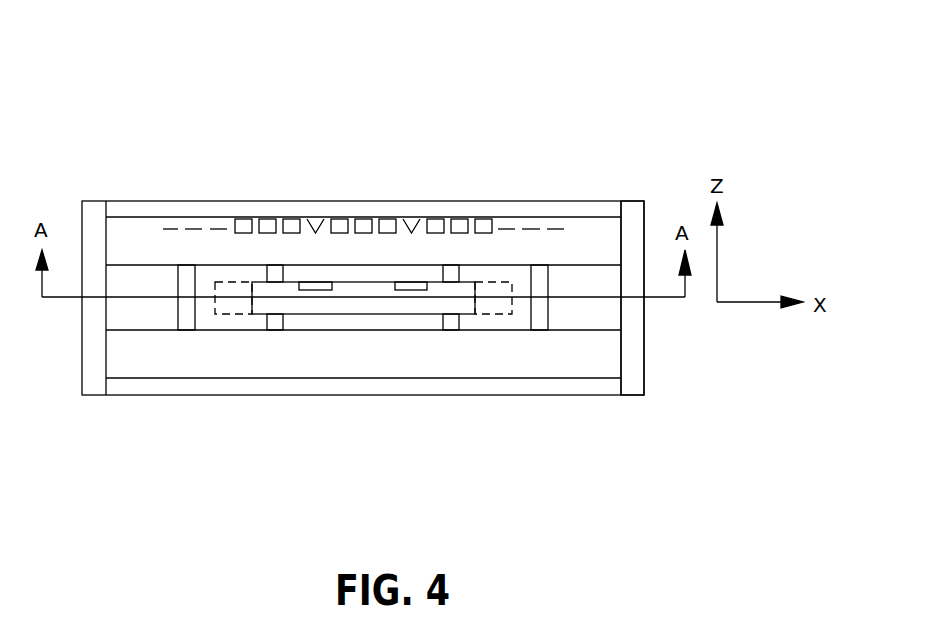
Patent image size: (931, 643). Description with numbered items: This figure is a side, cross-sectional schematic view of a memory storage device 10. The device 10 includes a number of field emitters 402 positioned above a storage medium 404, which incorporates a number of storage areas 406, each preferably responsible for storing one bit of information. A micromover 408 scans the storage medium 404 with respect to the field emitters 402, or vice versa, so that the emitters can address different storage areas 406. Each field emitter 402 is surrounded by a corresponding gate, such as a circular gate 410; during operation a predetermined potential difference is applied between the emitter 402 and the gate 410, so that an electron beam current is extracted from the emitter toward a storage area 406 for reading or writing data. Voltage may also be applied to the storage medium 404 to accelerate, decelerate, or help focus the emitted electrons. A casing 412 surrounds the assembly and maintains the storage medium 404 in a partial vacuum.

The memory storage device 10 is at (129, 146).
The field emitters 402 is at (411, 220).
The storage medium 404 is at (260, 314).
The storage areas 406 is at (404, 283).
The micromover 408 is at (143, 330).
The circular gate 410 is at (389, 222).
The casing 412 is at (632, 330).